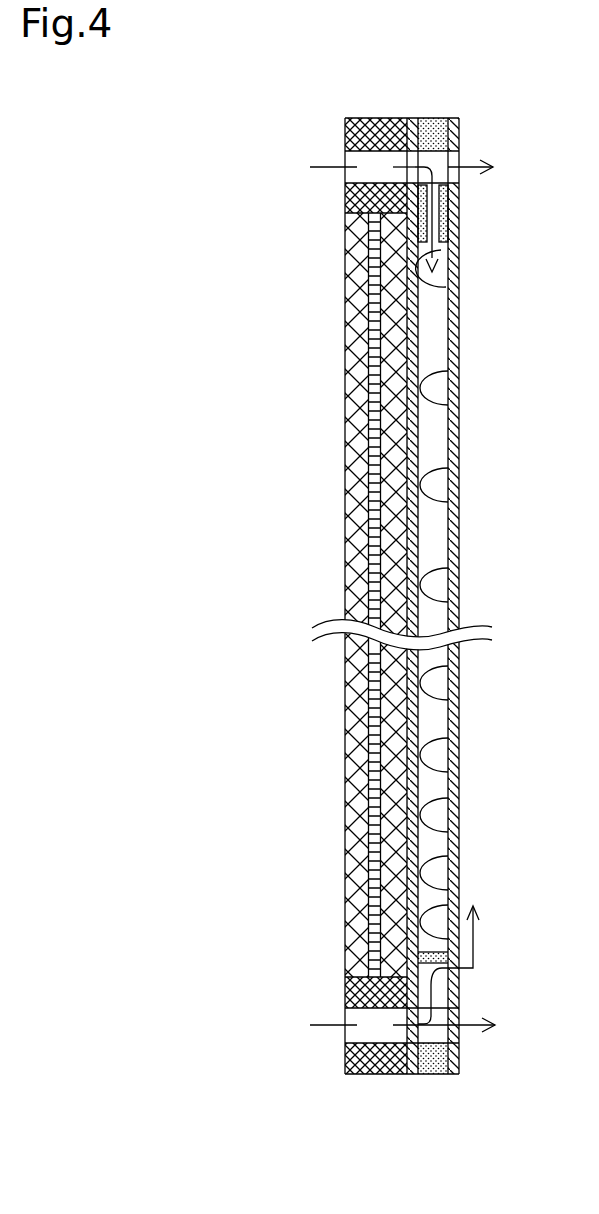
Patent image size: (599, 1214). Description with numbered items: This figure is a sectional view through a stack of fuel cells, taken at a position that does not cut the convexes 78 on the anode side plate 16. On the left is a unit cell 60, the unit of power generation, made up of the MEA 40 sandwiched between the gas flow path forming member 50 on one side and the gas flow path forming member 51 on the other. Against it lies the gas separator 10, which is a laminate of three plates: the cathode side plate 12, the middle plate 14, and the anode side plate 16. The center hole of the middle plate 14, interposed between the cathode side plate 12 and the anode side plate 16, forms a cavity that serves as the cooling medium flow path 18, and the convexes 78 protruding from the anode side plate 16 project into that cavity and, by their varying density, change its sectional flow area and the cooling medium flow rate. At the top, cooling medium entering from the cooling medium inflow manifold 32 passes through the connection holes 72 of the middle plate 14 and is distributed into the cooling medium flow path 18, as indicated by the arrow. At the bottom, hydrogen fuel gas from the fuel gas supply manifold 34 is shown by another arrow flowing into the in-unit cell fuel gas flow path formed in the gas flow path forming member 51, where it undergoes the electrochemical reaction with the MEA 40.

The gas separator 10 is at (409, 1077).
The cathode side plate 12 is at (420, 714).
The middle plate 14 is at (437, 118).
The anode side plate 16 is at (452, 313).
The cooling medium flow path 18 is at (433, 530).
The cooling medium inflow manifold 32 is at (390, 179).
The fuel gas supply manifold 34 is at (390, 1037).
The MEA 40 is at (365, 706).
The gas flow path forming member 50 is at (378, 768).
The gas flow path forming member 51 is at (355, 853).
The unit cell 60 is at (345, 1077).
The connection holes 72 is at (438, 213).
The convexes 78 is at (437, 485).